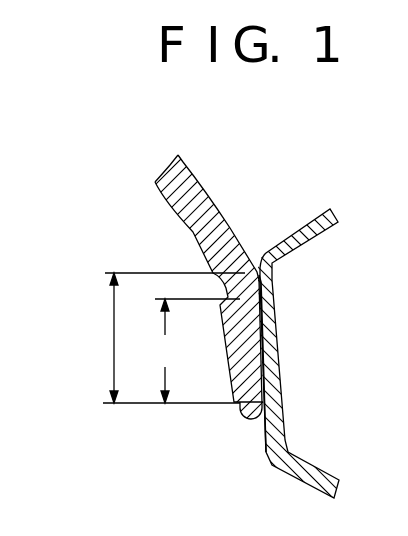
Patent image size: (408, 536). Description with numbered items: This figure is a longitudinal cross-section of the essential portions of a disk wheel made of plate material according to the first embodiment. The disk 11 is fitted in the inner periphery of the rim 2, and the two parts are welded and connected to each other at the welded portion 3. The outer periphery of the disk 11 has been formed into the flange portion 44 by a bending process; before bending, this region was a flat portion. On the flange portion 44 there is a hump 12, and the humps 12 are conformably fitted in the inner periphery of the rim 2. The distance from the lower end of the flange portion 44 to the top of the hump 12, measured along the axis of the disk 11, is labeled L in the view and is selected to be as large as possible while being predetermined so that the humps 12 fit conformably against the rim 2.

The disk 11 is at (193, 174).
The rim 2 is at (298, 233).
The hump 12 is at (256, 288).
The welded portion 3 is at (247, 422).
The flange portion 44 is at (113, 337).